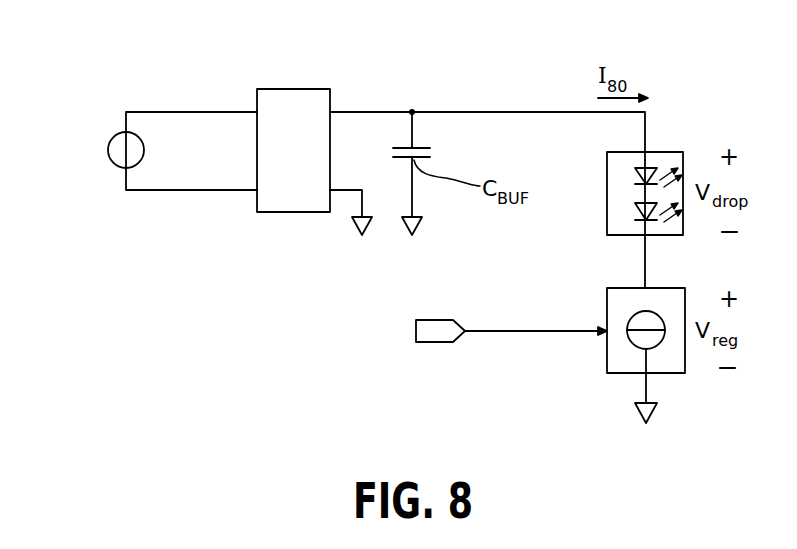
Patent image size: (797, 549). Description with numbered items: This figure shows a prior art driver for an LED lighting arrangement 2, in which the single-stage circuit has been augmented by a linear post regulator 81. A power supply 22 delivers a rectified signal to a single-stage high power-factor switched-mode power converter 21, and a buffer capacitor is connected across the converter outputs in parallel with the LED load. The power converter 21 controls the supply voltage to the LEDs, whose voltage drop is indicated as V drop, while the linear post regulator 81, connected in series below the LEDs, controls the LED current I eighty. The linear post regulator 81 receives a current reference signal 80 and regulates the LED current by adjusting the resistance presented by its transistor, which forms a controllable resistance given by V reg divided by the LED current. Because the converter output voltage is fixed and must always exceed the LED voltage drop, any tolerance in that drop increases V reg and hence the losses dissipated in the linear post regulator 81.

The LED lighting arrangement 2 is at (657, 151).
The power converter 21 is at (289, 89).
The power supply 22 is at (108, 148).
The current reference signal 80 is at (435, 343).
The linear post regulator 81 is at (615, 374).